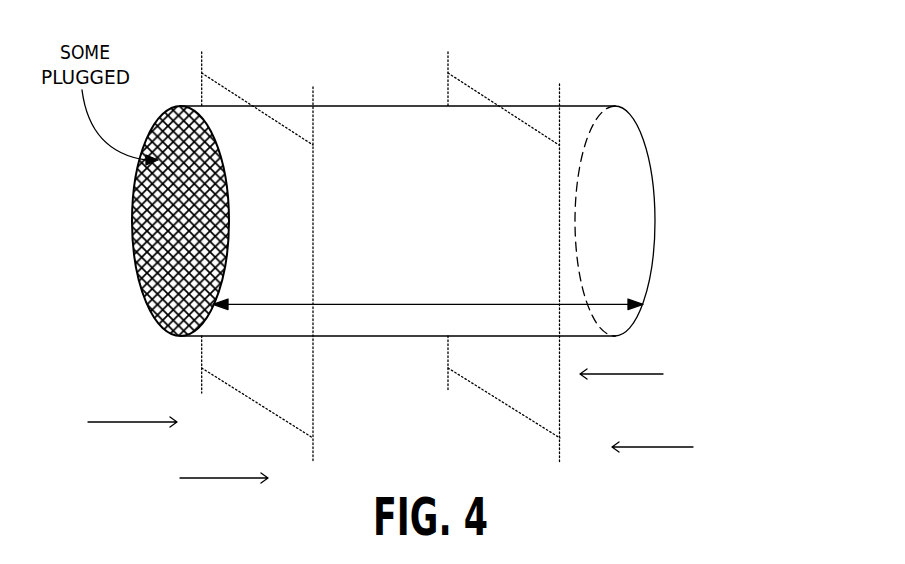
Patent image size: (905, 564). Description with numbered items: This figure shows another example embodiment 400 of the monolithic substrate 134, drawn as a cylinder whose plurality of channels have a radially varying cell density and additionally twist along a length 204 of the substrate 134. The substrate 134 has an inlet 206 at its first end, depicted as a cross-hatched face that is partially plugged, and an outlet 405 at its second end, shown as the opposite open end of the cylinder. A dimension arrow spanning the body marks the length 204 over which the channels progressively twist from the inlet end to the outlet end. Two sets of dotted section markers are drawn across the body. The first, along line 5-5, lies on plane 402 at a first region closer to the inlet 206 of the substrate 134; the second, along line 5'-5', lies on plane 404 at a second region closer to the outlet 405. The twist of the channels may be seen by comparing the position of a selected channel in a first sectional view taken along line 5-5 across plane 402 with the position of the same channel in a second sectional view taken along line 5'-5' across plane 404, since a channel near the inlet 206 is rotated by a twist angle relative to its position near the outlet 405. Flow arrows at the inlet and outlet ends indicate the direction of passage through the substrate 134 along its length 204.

The example embodiment 400 is at (671, 42).
The monolithic substrate 134 is at (352, 105).
The plane 402 is at (227, 87).
The plane 404 is at (472, 87).
The outlet 405 is at (655, 200).
The inlet 206 is at (230, 213).
The length 204 is at (382, 303).
The line 5- 5 is at (259, 257).
The line 5'- 5' is at (508, 256).